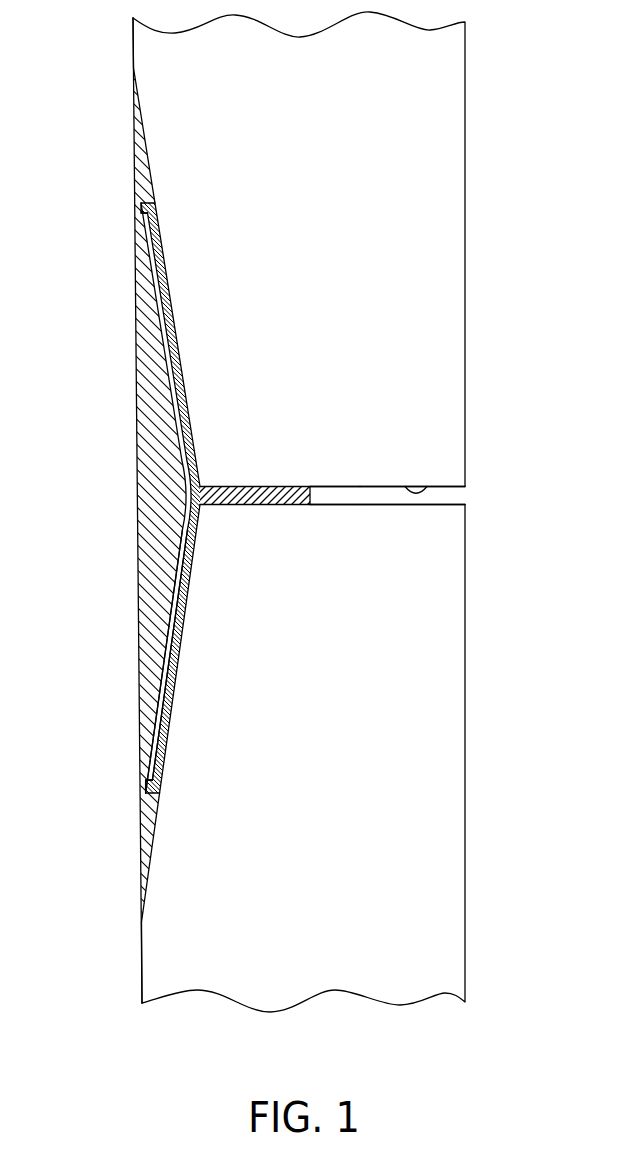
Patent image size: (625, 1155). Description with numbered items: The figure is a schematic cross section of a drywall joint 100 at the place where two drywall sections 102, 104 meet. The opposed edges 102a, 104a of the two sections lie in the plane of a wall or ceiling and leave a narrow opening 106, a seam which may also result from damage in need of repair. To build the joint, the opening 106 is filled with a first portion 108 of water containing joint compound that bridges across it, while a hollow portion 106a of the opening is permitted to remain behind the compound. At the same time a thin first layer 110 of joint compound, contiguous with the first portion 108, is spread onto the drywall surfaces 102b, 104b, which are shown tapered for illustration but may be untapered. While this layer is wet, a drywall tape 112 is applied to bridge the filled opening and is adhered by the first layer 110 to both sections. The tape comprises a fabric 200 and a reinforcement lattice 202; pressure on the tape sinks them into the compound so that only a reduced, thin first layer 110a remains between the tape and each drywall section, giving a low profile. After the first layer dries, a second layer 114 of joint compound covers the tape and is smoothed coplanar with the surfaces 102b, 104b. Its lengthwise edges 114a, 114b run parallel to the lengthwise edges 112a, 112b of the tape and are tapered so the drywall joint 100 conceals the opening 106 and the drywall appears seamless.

The drywall joint 100 is at (128, 478).
The drywall section 102 is at (324, 738).
The opposed edge 102a is at (372, 504).
The drywall surface 102b is at (140, 975).
The drywall section 104 is at (322, 398).
The opposed edge 104a is at (427, 486).
The drywall surface 104b is at (133, 50).
The opening 106 is at (452, 486).
The hollow portion 106a is at (312, 493).
The first portion of joint compound 108 is at (298, 505).
The thin first layer of joint compound 110 is at (141, 205).
The thin first layer 110a is at (150, 300).
The drywall tape 112 is at (140, 253).
The lengthwise edge of drywall tape 112a is at (140, 778).
The lengthwise edge of drywall tape 112b is at (141, 232).
The second layer of joint compound 114 is at (135, 355).
The lengthwise edge of second layer 114a is at (139, 908).
The lengthwise edge of second layer 114b is at (133, 80).
The fabric 200 is at (178, 603).
The reinforcement lattice 202 is at (178, 583).